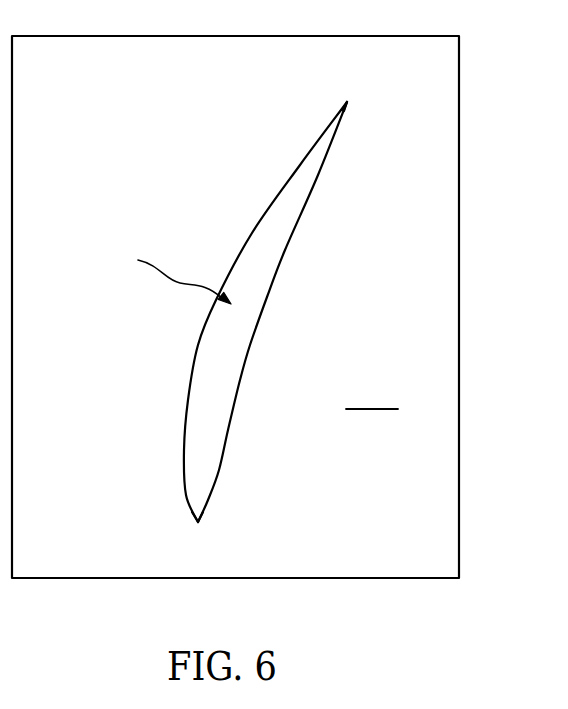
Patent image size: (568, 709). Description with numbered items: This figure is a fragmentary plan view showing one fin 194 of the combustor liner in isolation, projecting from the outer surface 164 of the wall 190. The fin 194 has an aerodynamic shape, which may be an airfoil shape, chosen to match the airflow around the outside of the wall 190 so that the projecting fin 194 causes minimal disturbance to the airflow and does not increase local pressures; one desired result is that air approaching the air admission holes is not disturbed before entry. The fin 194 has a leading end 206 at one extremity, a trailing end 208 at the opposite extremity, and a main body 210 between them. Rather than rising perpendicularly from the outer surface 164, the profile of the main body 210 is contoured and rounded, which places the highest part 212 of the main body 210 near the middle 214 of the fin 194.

The wall 190 is at (443, 236).
The outer surface 164 is at (372, 395).
The fin 194 is at (220, 342).
The trailing end 208 is at (347, 102).
The leading end 206 is at (198, 522).
The main body 210 is at (203, 340).
The highest part 212 is at (237, 300).
The middle 214 is at (159, 269).